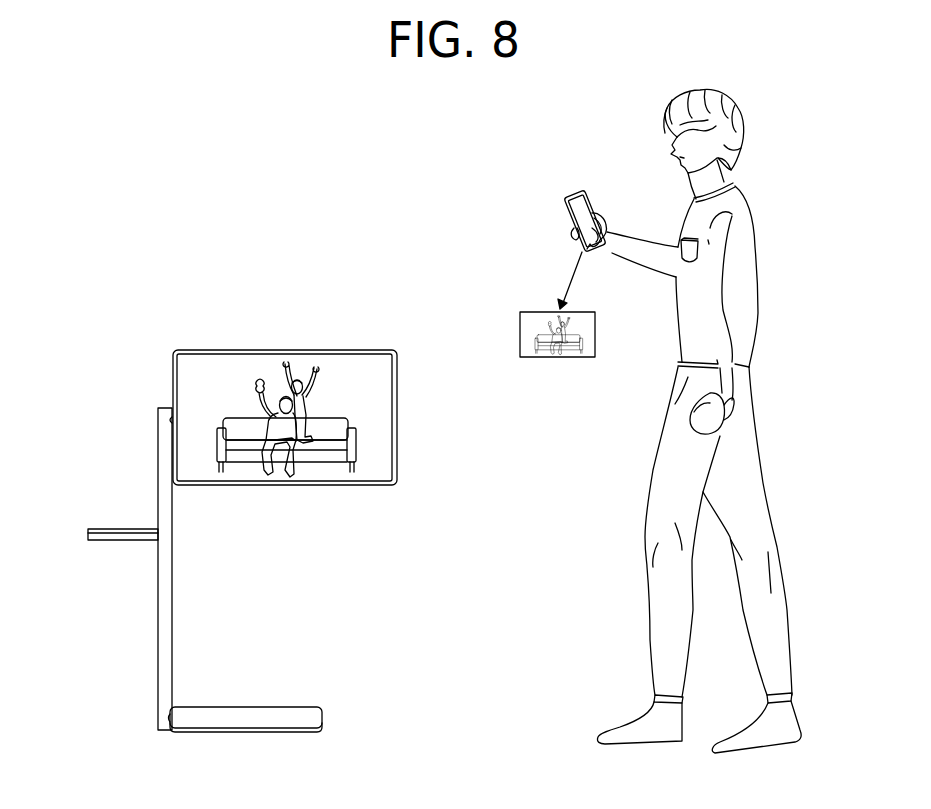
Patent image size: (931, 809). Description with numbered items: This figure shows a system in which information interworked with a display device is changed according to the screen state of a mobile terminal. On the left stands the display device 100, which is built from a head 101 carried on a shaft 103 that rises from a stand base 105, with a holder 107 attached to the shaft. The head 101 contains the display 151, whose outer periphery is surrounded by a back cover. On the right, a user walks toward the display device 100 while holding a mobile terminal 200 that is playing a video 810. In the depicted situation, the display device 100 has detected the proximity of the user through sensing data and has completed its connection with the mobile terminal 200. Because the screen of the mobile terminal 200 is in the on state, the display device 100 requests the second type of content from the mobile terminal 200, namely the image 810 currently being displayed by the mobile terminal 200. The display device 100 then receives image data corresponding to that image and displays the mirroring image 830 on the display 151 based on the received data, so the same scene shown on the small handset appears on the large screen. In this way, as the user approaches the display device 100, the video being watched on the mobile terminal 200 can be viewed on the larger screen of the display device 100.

The display device 100 is at (206, 318).
The head 101 is at (397, 400).
The display 151 is at (382, 432).
The mirroring image 830 is at (353, 365).
The shaft 103 is at (160, 468).
The stand base 105 is at (258, 710).
The holder 107 is at (96, 529).
The mobile terminal 200 is at (568, 200).
The video (image being displayed) 810 is at (528, 316).